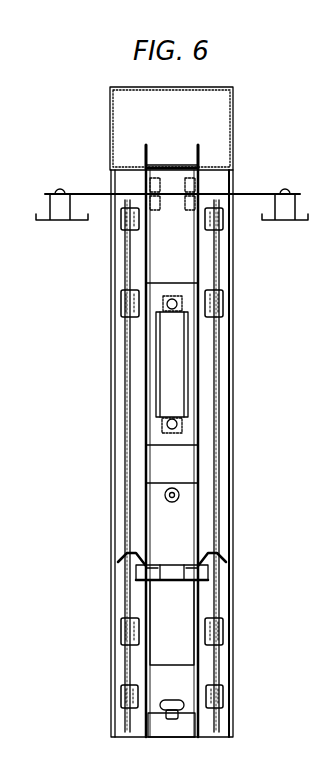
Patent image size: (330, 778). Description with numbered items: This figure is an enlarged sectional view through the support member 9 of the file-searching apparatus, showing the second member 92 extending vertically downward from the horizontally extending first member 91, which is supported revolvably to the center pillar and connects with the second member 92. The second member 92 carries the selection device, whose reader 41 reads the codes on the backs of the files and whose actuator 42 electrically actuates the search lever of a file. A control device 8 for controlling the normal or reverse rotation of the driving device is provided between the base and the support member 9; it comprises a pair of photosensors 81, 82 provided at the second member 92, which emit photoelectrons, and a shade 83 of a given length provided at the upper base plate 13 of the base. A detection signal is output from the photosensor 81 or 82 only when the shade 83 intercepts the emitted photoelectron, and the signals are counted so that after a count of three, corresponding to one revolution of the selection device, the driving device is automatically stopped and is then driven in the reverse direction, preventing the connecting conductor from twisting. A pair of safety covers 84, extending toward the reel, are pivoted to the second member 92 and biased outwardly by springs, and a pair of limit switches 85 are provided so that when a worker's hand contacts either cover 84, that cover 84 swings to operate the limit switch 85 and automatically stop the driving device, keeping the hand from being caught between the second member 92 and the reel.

The control device 8 is at (162, 149).
The support member 9 is at (238, 160).
The upper base plate 13 is at (88, 212).
The reader 41 is at (180, 360).
The actuator 42 is at (180, 496).
The photosensor 81 is at (150, 172).
The photosensor 82 is at (203, 172).
The shade 83 is at (80, 193).
The safety cover 84 is at (115, 452).
The limit switch 85 is at (125, 572).
The first member 91 is at (235, 128).
The second member 92 is at (235, 402).